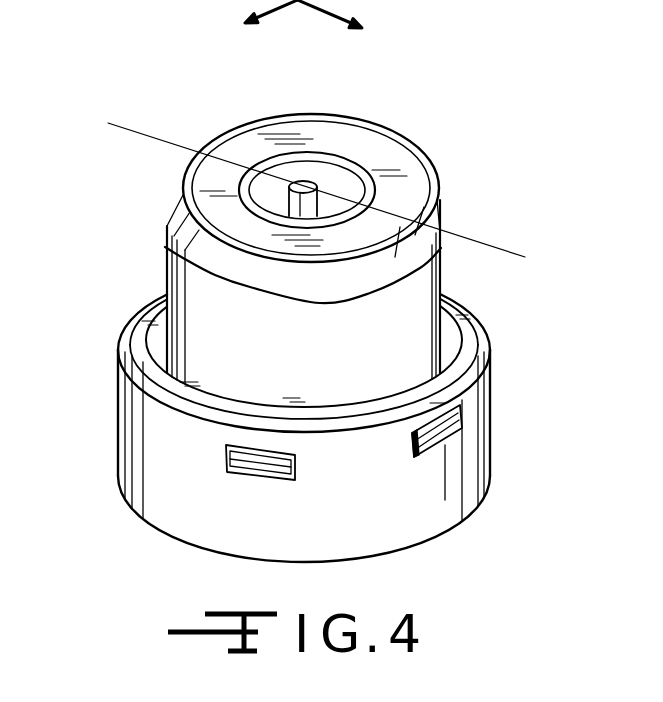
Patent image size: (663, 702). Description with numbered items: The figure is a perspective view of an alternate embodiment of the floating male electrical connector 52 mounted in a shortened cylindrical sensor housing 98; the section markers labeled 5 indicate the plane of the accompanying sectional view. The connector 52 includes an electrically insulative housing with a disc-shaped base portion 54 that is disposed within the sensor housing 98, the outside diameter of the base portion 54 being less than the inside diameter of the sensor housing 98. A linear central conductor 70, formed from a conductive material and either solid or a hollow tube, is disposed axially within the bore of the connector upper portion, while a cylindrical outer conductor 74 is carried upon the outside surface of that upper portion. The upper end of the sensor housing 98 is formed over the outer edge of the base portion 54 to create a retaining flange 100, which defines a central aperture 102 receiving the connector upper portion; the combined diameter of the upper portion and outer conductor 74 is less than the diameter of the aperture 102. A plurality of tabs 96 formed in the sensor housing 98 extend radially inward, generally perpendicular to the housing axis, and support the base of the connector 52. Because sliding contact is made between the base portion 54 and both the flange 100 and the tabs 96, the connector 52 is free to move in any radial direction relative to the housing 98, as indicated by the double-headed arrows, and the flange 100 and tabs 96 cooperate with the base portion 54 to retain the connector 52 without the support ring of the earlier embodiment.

The section line 5- 5 is at (166, 122).
The floating male electrical connector 52 is at (462, 169).
The base portion 54 is at (460, 404).
The central conductor 70 is at (310, 207).
The outer conductor 74 is at (401, 145).
The tabs 96 is at (437, 444).
The sensor housing 98 is at (488, 450).
The retaining flange 100 is at (455, 340).
The central aperture 102 is at (160, 306).